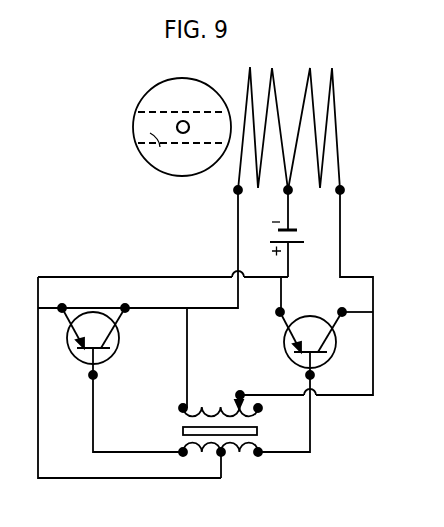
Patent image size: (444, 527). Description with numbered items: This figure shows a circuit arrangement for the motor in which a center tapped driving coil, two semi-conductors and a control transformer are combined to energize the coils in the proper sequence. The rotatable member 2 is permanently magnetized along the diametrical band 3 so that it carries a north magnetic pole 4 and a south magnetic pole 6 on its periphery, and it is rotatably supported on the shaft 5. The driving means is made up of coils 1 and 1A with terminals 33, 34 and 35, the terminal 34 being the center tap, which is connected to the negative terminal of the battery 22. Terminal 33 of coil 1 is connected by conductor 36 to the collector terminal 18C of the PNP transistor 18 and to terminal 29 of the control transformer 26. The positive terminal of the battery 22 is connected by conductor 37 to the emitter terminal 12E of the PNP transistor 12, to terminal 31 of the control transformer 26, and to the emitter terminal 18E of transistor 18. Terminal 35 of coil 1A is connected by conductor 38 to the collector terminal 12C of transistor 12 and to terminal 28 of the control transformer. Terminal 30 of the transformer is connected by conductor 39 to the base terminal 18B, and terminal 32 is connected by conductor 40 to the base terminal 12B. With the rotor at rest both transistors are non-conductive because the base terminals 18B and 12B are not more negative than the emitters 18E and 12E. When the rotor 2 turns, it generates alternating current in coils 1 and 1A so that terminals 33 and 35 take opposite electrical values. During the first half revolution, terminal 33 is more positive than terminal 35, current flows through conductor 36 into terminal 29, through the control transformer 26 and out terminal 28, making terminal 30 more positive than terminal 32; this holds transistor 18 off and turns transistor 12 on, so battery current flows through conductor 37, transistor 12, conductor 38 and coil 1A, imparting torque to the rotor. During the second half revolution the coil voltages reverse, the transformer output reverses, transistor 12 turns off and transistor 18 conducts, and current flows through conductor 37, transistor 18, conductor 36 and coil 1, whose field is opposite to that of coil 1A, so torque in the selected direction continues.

The driving coil 1 is at (250, 85).
The driving coil 1A is at (333, 86).
The rotatable member 2 is at (176, 173).
The diametrical band 3 is at (167, 118).
The north magnetic pole 4 is at (155, 153).
The shaft 5 is at (190, 123).
The south magnetic pole 6 is at (224, 136).
The PNP transistor 12 is at (328, 353).
The emitter terminal of transistor 12 12E is at (283, 312).
The collector terminal of transistor 12 12C is at (342, 312).
The base terminal of transistor 12 12B is at (316, 375).
The PNP transistor 18 is at (113, 350).
The emitter terminal of transistor 18 18E is at (65, 308).
The collector terminal of transistor 18 18C is at (129, 307).
The base terminal of transistor 18 18B is at (95, 375).
The battery 22 is at (298, 242).
The control transformer 26 is at (215, 430).
The terminal of control transformer 28 is at (240, 393).
The terminal of control transformer 29 is at (180, 408).
The terminal of control transformer 30 is at (183, 454).
The terminal of control transformer 31 is at (223, 453).
The terminal of control transformer 32 is at (259, 452).
The terminal of driving means 33 is at (236, 190).
The center tap 34 is at (289, 192).
The terminal of coil 1A 35 is at (342, 190).
The conductor 36 is at (238, 239).
The conductor 37 is at (144, 277).
The conductor 38 is at (342, 238).
The conductor 39 is at (94, 399).
The conductor 40 is at (311, 439).